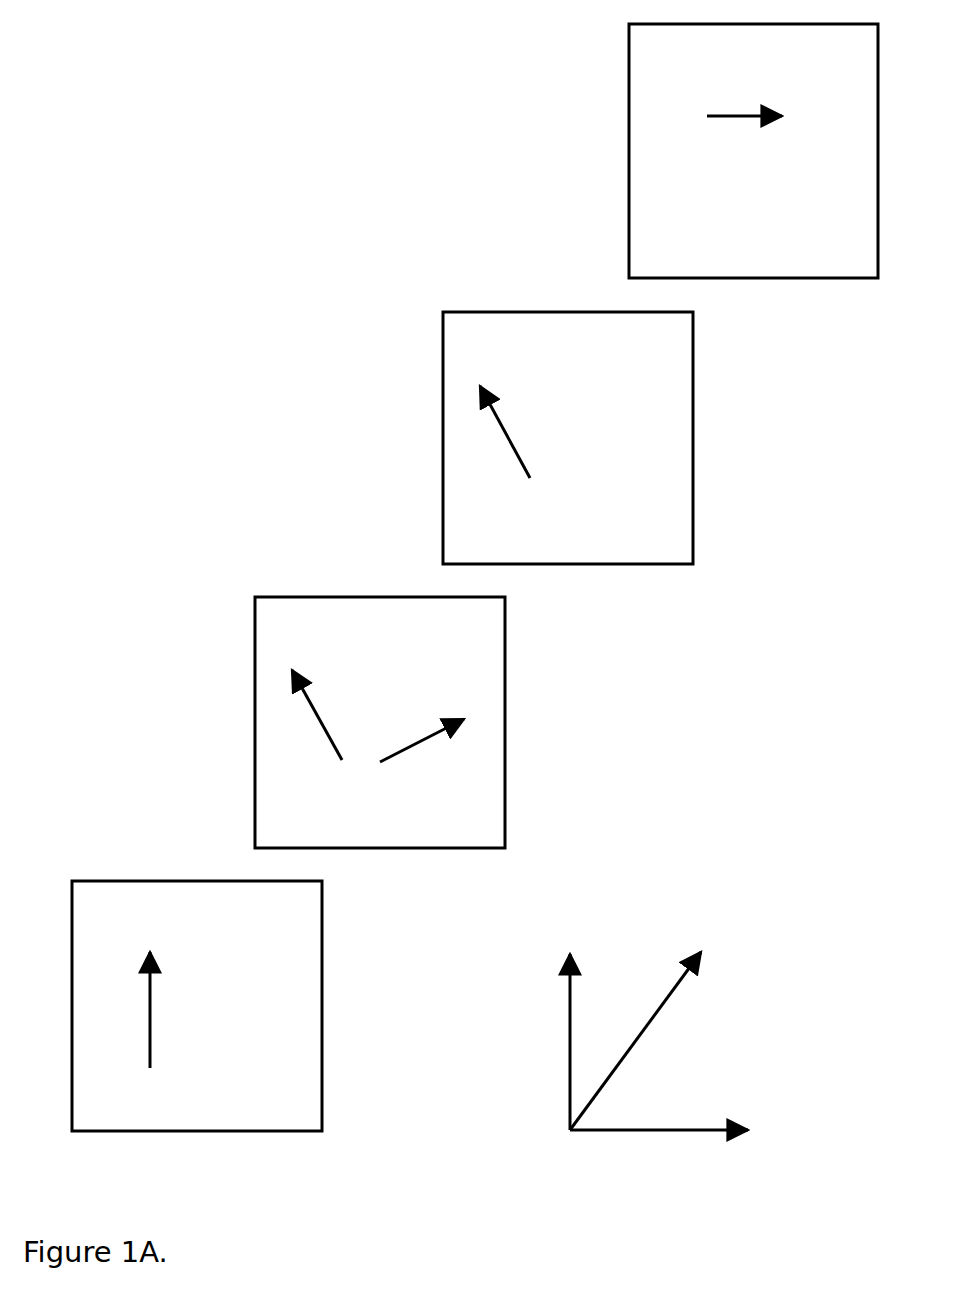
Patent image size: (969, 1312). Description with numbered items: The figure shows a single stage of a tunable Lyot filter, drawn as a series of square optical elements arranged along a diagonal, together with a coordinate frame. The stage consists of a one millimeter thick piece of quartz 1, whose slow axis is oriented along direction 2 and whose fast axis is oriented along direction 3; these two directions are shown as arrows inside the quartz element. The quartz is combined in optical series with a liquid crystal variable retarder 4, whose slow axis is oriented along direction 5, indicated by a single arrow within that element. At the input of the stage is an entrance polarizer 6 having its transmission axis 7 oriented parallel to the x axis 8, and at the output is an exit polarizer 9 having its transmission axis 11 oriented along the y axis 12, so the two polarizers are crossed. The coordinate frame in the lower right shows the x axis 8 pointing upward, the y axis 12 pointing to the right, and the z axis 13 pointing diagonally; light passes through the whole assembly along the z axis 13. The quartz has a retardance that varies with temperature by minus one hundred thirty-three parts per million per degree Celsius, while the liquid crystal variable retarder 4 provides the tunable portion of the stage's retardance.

The piece of quartz 1 is at (255, 758).
The slow axis direction 2 is at (328, 743).
The fast axis direction 3 is at (437, 733).
The liquid crystal variable retarder 4 is at (443, 455).
The slow axis direction of variable retarder 5 is at (517, 458).
The entrance polarizer 6 is at (72, 1037).
The transmission axis of entrance polarizer 7 is at (143, 990).
The x axis 8 is at (570, 1022).
The exit polarizer 9 is at (629, 171).
The transmission axis of exit polarizer 11 is at (723, 117).
The y axis 12 is at (613, 1132).
The z axis 13 is at (633, 1047).